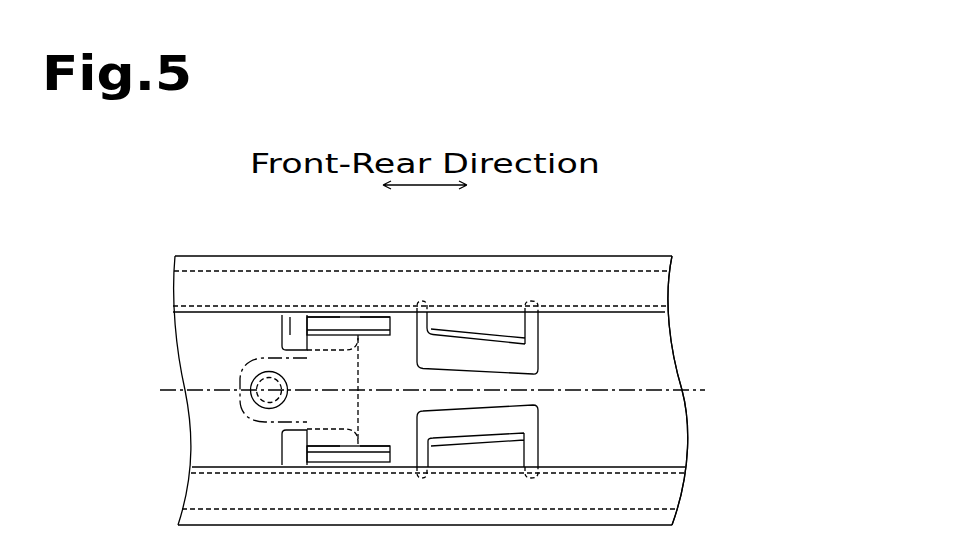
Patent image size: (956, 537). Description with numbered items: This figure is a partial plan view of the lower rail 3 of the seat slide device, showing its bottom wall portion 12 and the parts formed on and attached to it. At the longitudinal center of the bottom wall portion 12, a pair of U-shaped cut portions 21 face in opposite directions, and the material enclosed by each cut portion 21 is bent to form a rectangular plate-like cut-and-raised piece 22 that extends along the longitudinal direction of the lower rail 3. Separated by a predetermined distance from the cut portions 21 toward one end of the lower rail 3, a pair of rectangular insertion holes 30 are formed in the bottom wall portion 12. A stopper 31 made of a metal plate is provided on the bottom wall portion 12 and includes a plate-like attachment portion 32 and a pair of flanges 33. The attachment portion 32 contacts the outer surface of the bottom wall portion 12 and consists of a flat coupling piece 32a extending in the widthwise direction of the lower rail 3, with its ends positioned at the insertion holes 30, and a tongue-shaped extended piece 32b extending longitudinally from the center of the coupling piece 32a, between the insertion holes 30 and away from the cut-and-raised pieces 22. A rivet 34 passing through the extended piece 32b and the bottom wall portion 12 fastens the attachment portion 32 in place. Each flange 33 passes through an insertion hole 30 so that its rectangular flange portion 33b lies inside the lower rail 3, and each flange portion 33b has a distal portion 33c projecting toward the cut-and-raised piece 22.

The lower rail 3 is at (534, 245).
The bottom wall portion 12 is at (668, 448).
The cut portion 21 is at (537, 343).
The cut-and-raised piece 22 is at (512, 326).
The insertion hole 30 is at (282, 326).
The stopper 31 is at (360, 367).
The attachment portion 32 is at (358, 408).
The coupling piece 32a is at (305, 343).
The extended piece 32b is at (247, 381).
The flange 33 is at (352, 321).
The flange portion 33b is at (330, 321).
The distal portion 33c is at (380, 321).
The rivet 34 is at (252, 409).